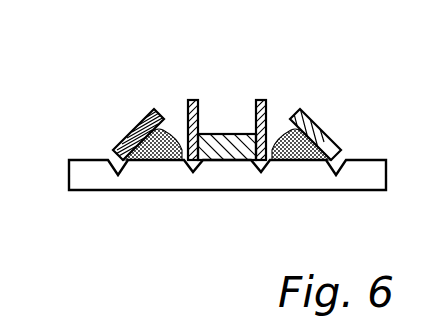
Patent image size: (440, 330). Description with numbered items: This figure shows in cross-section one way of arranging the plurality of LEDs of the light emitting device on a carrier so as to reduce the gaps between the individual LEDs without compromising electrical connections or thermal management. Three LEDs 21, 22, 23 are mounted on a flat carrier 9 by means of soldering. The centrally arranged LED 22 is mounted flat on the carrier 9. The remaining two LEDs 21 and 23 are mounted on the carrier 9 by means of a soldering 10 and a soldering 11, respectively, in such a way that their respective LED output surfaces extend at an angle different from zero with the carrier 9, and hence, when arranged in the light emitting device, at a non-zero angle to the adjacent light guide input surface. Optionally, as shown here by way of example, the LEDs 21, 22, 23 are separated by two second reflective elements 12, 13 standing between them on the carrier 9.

The carrier 9 is at (82, 172).
The soldering 10 is at (156, 152).
The soldering 11 is at (294, 156).
The second reflective element 12 is at (187, 106).
The second reflective element 13 is at (267, 104).
The LED 21 is at (140, 120).
The LED 22 is at (218, 133).
The LED 23 is at (317, 123).